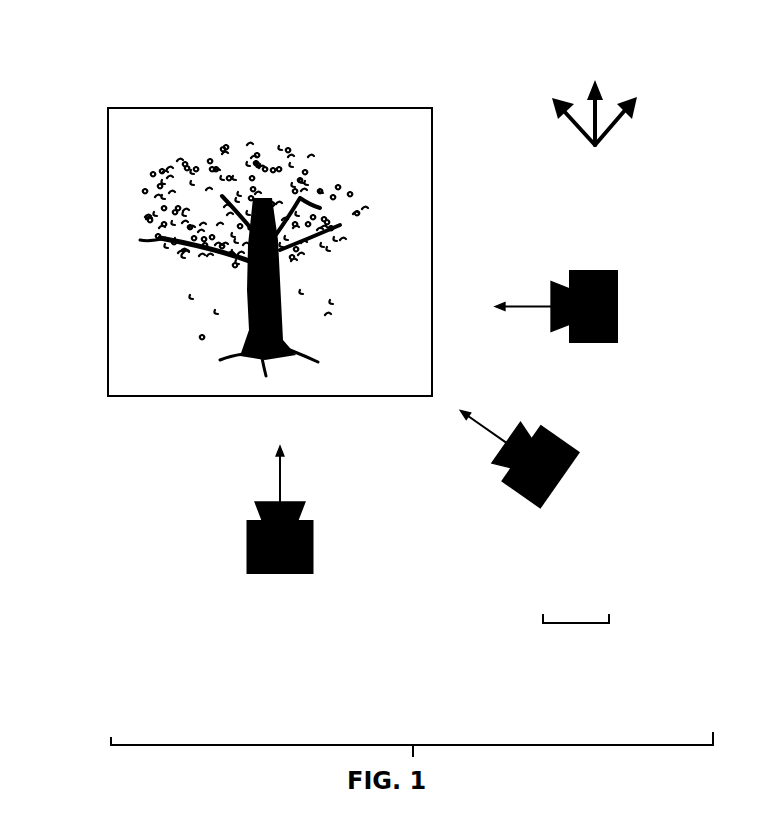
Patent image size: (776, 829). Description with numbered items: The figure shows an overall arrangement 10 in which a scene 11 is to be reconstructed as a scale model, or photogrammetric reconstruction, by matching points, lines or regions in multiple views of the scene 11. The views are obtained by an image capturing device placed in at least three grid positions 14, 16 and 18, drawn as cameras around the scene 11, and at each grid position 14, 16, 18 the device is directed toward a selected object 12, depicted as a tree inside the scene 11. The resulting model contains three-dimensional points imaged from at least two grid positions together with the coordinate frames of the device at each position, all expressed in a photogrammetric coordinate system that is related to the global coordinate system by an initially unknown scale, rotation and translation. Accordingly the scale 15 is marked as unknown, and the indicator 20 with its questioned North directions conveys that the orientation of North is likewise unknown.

The imaging system 10 is at (242, 662).
The scene 11 is at (201, 388).
The selected object 12 is at (313, 162).
The grid position 14 is at (604, 343).
The scale 15 is at (594, 620).
The grid position 16 is at (565, 478).
The grid position 18 is at (295, 574).
The orientation indicator 20 is at (595, 145).